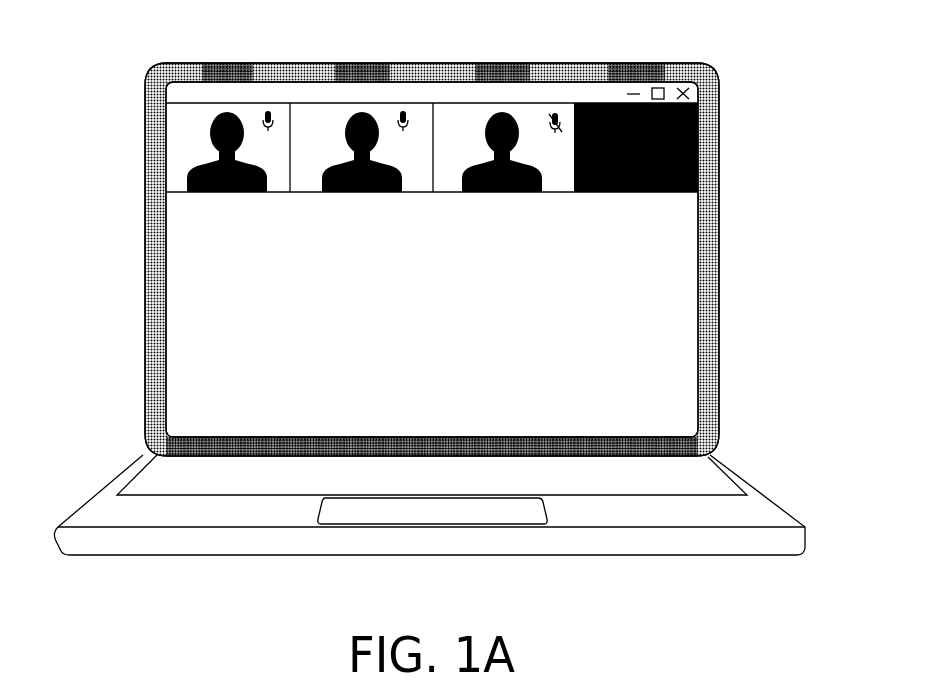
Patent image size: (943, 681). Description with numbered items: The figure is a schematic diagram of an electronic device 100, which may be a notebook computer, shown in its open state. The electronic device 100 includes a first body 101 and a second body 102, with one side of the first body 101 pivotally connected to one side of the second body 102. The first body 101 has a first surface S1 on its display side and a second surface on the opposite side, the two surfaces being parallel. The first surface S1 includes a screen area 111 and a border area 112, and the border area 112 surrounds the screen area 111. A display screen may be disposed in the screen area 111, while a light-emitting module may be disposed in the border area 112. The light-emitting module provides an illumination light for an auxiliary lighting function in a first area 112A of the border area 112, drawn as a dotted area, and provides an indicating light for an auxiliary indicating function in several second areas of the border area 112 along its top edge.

The electronic device 100 is at (814, 596).
The first body 101 is at (130, 264).
The second body 102 is at (110, 465).
The screen area 111 is at (682, 328).
The border area 112 is at (705, 375).
The first area 112A is at (160, 120).
The first surface S1 is at (682, 268).